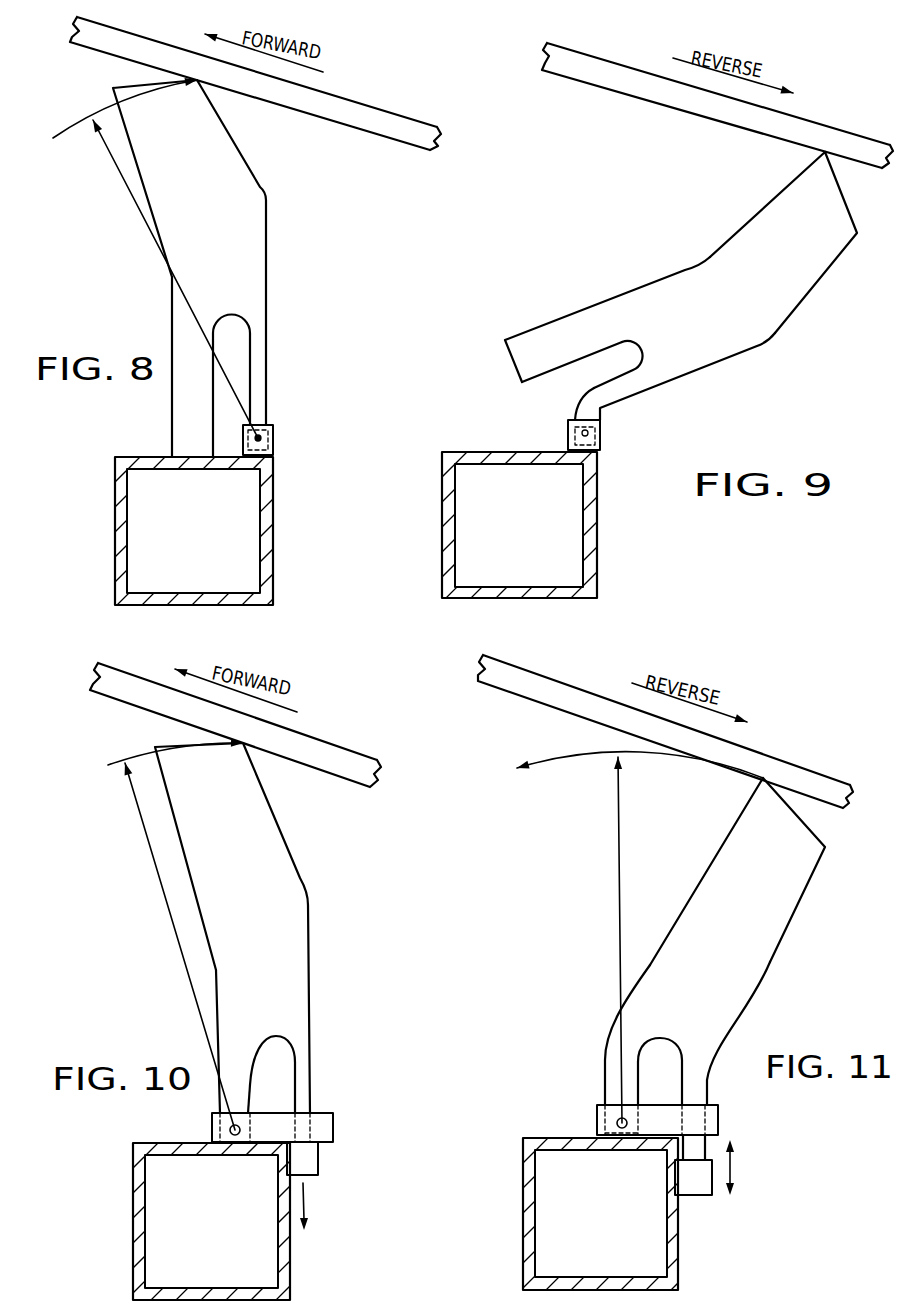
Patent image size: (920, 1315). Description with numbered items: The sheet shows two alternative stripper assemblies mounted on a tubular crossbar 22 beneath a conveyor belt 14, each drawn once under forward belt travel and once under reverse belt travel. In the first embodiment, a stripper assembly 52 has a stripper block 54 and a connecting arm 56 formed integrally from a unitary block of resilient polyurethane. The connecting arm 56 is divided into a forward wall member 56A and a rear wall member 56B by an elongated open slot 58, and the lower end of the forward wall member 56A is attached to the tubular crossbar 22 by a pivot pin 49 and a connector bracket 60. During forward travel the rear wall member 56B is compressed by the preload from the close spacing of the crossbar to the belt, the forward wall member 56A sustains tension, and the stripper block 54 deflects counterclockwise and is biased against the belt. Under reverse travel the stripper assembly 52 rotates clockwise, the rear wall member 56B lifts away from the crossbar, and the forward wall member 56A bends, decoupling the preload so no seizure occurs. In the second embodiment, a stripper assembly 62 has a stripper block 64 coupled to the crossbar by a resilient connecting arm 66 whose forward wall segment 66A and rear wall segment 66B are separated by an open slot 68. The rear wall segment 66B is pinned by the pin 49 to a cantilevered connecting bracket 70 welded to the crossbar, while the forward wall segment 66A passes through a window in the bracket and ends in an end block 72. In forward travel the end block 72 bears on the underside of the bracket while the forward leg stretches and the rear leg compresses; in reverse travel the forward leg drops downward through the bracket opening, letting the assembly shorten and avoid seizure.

In FIG. 8, the conveyor belt 14 is at (397, 125).
In FIG. 9, the conveyor belt 14 is at (810, 127).
In FIG. 10, the conveyor belt 14 is at (325, 748).
In FIG. 11, the conveyor belt 14 is at (772, 762).
In FIG. 8, the tubular crossbar 22 is at (112, 533).
In FIG. 9, the tubular crossbar 22 is at (440, 545).
In FIG. 10, the tubular crossbar 22 is at (132, 1230).
In FIG. 11, the tubular crossbar 22 is at (520, 1222).
In FIG. 8, the pivot pin 49 is at (261, 438).
In FIG. 9, the pivot pin 49 is at (589, 433).
In FIG. 10, the pivot pin 49 is at (228, 1130).
In FIG. 11, the pivot pin 49 is at (617, 1123).
In FIG. 8, the stripper assembly 52 is at (228, 268).
In FIG. 9, the stripper assembly 52 is at (673, 286).
In FIG. 8, the stripper block 54 is at (215, 143).
In FIG. 9, the stripper block 54 is at (797, 280).
In FIG. 8, the connecting arm 56 is at (248, 273).
In FIG. 9, the connecting arm 56 is at (677, 305).
In FIG. 8, the forward wall member 56A is at (258, 383).
In FIG. 9, the forward wall member 56A is at (613, 388).
In FIG. 8, the rear wall member 56B is at (192, 418).
In FIG. 9, the rear wall member 56B is at (557, 322).
In FIG. 8, the elongated open slot 58 is at (232, 345).
In FIG. 9, the elongated open slot 58 is at (590, 370).
In FIG. 8, the connector bracket 60 is at (275, 452).
In FIG. 9, the connector bracket 60 is at (568, 435).
In FIG. 10, the stripper assembly 62 is at (255, 928).
In FIG. 11, the stripper assembly 62 is at (700, 969).
In FIG. 10, the stripper block 64 is at (257, 828).
In FIG. 11, the stripper block 64 is at (782, 868).
In FIG. 10, the resilient connecting arm 66 is at (297, 945).
In FIG. 11, the resilient connecting arm 66 is at (748, 962).
In FIG. 10, the forward wall segment 66A is at (305, 1085).
In FIG. 11, the forward wall segment 66A is at (697, 1090).
In FIG. 10, the rear wall segment 66B is at (233, 1051).
In FIG. 11, the rear wall segment 66B is at (613, 1082).
In FIG. 10, the open slot 68 is at (273, 1050).
In FIG. 11, the open slot 68 is at (658, 1057).
In FIG. 10, the connecting bracket 70 is at (335, 1123).
In FIG. 11, the connecting bracket 70 is at (722, 1120).
In FIG. 10, the end block 72 is at (310, 1162).
In FIG. 11, the end block 72 is at (698, 1185).